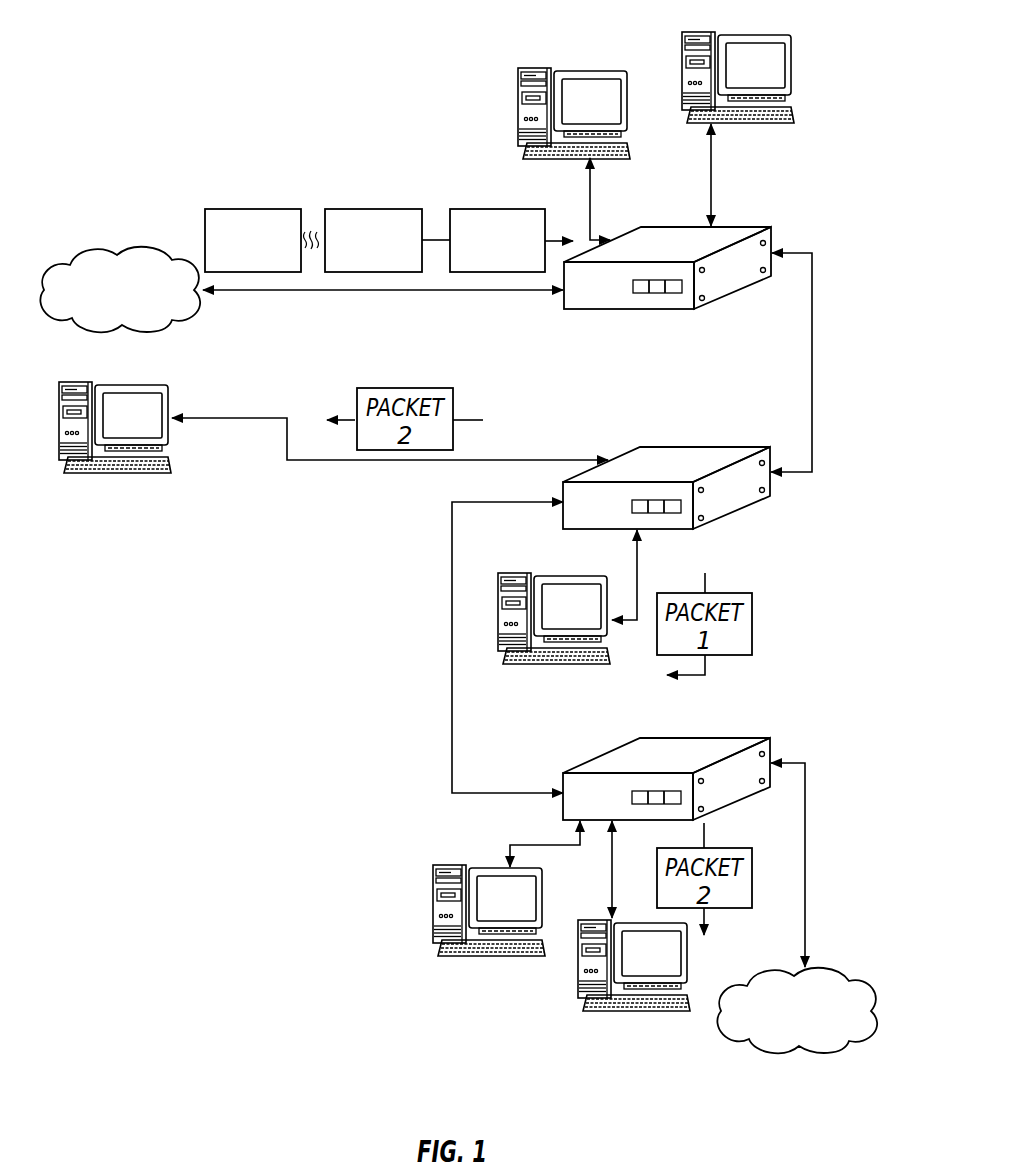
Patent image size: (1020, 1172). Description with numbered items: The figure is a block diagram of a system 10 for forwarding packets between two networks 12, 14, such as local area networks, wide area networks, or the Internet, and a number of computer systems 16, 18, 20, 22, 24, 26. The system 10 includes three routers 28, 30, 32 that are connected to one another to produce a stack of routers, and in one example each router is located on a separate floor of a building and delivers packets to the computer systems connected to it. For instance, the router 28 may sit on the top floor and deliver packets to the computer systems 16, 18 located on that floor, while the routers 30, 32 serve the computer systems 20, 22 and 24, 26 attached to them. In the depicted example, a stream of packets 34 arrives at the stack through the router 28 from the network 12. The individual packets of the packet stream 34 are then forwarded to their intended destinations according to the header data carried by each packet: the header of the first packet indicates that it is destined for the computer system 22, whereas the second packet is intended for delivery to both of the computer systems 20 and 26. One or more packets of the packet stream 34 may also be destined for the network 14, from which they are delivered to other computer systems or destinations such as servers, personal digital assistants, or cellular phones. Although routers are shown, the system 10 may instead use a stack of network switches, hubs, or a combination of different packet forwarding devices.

The system 10 is at (193, 58).
The network 12 is at (127, 250).
The network 14 is at (832, 977).
The computer system 16 is at (531, 67).
The computer system 18 is at (701, 31).
The computer system 20 is at (75, 382).
The computer system 22 is at (515, 573).
The computer system 24 is at (455, 865).
The computer system 26 is at (573, 970).
The router 28 is at (752, 228).
The router 30 is at (750, 447).
The router 32 is at (750, 738).
The stream of packets 34 is at (548, 206).